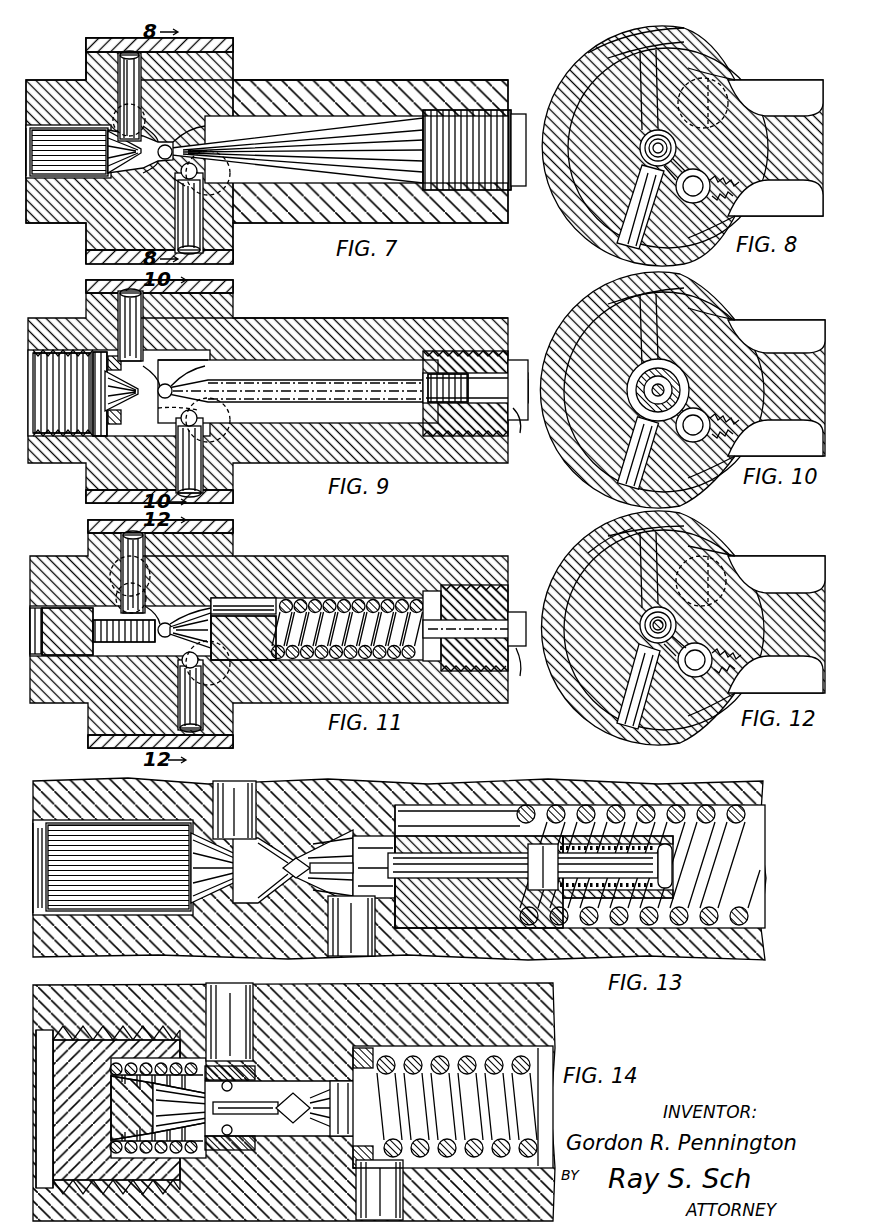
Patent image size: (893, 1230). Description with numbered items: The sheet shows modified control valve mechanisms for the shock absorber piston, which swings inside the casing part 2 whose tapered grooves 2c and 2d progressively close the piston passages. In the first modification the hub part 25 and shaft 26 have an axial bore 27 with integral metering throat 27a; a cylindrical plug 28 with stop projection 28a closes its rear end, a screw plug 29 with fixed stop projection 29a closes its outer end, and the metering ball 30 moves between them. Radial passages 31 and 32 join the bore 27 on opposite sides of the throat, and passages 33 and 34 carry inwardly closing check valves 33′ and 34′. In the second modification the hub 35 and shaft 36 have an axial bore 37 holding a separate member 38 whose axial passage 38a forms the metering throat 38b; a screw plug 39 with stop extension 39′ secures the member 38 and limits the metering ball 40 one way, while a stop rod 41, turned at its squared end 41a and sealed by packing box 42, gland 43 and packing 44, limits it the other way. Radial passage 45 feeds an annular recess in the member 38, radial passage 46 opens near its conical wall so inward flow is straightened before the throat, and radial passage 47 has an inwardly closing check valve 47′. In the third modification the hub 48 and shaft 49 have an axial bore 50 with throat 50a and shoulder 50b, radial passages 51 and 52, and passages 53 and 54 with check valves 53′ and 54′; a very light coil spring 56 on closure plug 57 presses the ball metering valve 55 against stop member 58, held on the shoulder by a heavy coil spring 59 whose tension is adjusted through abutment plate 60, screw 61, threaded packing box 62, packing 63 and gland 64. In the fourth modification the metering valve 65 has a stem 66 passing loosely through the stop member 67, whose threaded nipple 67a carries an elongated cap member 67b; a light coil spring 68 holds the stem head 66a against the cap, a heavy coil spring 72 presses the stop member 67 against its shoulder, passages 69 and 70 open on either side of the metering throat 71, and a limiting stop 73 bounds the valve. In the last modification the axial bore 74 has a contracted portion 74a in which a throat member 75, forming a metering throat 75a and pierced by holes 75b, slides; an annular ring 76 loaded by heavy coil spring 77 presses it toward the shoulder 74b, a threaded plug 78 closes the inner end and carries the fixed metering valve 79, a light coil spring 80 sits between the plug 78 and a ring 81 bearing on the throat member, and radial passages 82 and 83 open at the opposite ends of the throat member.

In FIG. 7, the casing part 2 is at (80, 34).
In FIG. 8, the casing part 2 is at (555, 203).
In FIG. 9, the casing part 2 is at (80, 288).
In FIG. 10, the casing part 2 is at (560, 458).
In FIG. 11, the casing part 2 is at (80, 532).
In FIG. 12, the casing part 2 is at (560, 692).
In FIG. 7, the tapered grooves 2c is at (125, 40).
In FIG. 8, the tapered grooves 2c is at (690, 34).
In FIG. 9, the tapered grooves 2c is at (95, 280).
In FIG. 10, the tapered grooves 2c is at (690, 288).
In FIG. 11, the tapered grooves 2c is at (95, 525).
In FIG. 12, the tapered grooves 2c is at (690, 522).
In FIG. 7, the tapered grooves 2d is at (80, 248).
In FIG. 8, the tapered grooves 2d is at (688, 250).
In FIG. 9, the tapered grooves 2d is at (80, 488).
In FIG. 10, the tapered grooves 2d is at (688, 490).
In FIG. 11, the tapered grooves 2d is at (82, 732).
In FIG. 12, the tapered grooves 2d is at (686, 728).
In FIG. 7, the hub part of the piston 25 is at (213, 62).
In FIG. 8, the hub part of the piston 25 is at (600, 80).
In FIG. 7, the shaft 26 is at (322, 72).
In FIG. 7, the axial bore 27 is at (285, 170).
In FIG. 8, the axial bore 27 is at (628, 146).
In FIG. 7, the metering throat 27a is at (160, 130).
In FIG. 8, the metering throat 27a is at (640, 128).
In FIG. 7, the cylindrical plug 28 is at (50, 170).
In FIG. 7, the stop projection 28a is at (112, 160).
In FIG. 7, the screw plug 29 is at (458, 102).
In FIG. 7, the fixed stop projection 29a is at (268, 128).
In FIG. 8, the fixed stop projection 29a is at (632, 142).
In FIG. 7, the metering ball 30 is at (152, 152).
In FIG. 7, the radially extending passage 31 is at (78, 50).
In FIG. 8, the radially extending passage 31 is at (608, 40).
In FIG. 7, the radial passage 32 is at (200, 230).
In FIG. 8, the radial passage 32 is at (615, 232).
In FIG. 7, the radial passage 33 is at (205, 172).
In FIG. 8, the radial passage 33 is at (700, 165).
In FIG. 7, the inwardly closing check valve 33′ is at (165, 190).
In FIG. 8, the inwardly closing check valve 33′ is at (740, 192).
In FIG. 7, the radial passage 34 is at (110, 124).
In FIG. 8, the radial passage 34 is at (705, 108).
In FIG. 7, the inwardly closing check valve 34′ is at (142, 97).
In FIG. 8, the inwardly closing check valve 34′ is at (745, 88).
In FIG. 9, the hub 35 is at (213, 306).
In FIG. 10, the hub 35 is at (596, 310).
In FIG. 9, the shaft 36 is at (322, 312).
In FIG. 9, the axial bore 37 is at (293, 415).
In FIG. 10, the axial bore 37 is at (625, 396).
In FIG. 9, the separate member 38 is at (158, 362).
In FIG. 10, the separate member 38 is at (625, 370).
In FIG. 9, the axial passage 38a is at (113, 418).
In FIG. 10, the axial passage 38a is at (642, 388).
In FIG. 9, the metering throat 38b is at (182, 356).
In FIG. 9, the screw plug 39 is at (58, 430).
In FIG. 9, the stop extension 39′ is at (92, 430).
In FIG. 9, the metering ball 40 is at (140, 400).
In FIG. 9, the stop rod 41 is at (305, 372).
In FIG. 9, the squared projecting end 41a is at (510, 430).
In FIG. 9, the packing box 42 is at (452, 343).
In FIG. 9, the gland 43 is at (505, 352).
In FIG. 9, the packing 44 is at (450, 428).
In FIG. 9, the radial passage 45 is at (110, 298).
In FIG. 10, the radial passage 45 is at (652, 306).
In FIG. 9, the radial passage 46 is at (200, 466).
In FIG. 10, the radial passage 46 is at (612, 478).
In FIG. 9, the second radial passage 47 is at (195, 404).
In FIG. 10, the second radial passage 47 is at (695, 400).
In FIG. 9, the inwardly closing check valve 47′ is at (205, 424).
In FIG. 10, the inwardly closing check valve 47′ is at (740, 432).
In FIG. 11, the hub 48 is at (213, 546).
In FIG. 12, the hub 48 is at (590, 550).
In FIG. 11, the shaft 49 is at (325, 590).
In FIG. 11, the axial bore 50 is at (262, 595).
In FIG. 12, the axial bore 50 is at (632, 624).
In FIG. 11, the metering throat 50a is at (152, 606).
In FIG. 12, the metering throat 50a is at (640, 612).
In FIG. 11, the shoulder 50b is at (258, 590).
In FIG. 11, the radial passage 51 is at (113, 540).
In FIG. 12, the radial passage 51 is at (640, 560).
In FIG. 11, the radial passage 52 is at (198, 703).
In FIG. 12, the radial passage 52 is at (615, 716).
In FIG. 11, the radially extending passage 53 is at (108, 590).
In FIG. 12, the radially extending passage 53 is at (704, 588).
In FIG. 11, the inwardly closing check valve 53′ is at (102, 566).
In FIG. 12, the inwardly closing check valve 53′ is at (745, 565).
In FIG. 11, the radially extending passage 54 is at (197, 650).
In FIG. 12, the radially extending passage 54 is at (700, 640).
In FIG. 11, the inwardly closing check valve 54′ is at (208, 672).
In FIG. 12, the inwardly closing check valve 54′ is at (740, 670).
In FIG. 11, the ball metering valve 55 is at (156, 630).
In FIG. 11, the very light coil spring 56 is at (128, 634).
In FIG. 11, the closure plug 57 is at (56, 648).
In FIG. 11, the stop member 58 is at (185, 606).
In FIG. 12, the stop member 58 is at (635, 606).
In FIG. 11, the relatively heavy coil spring 59 is at (370, 590).
In FIG. 11, the abutment plate 60 is at (425, 583).
In FIG. 11, the screw 61 is at (506, 604).
In FIG. 11, the threaded packing box 62 is at (462, 580).
In FIG. 11, the packing 63 is at (462, 630).
In FIG. 11, the gland 64 is at (528, 671).
In FIG. 13, the metering valve 65 is at (278, 878).
In FIG. 13, the stem 66 is at (412, 828).
In FIG. 13, the head 66a is at (660, 836).
In FIG. 13, the main member of the yieldable stop 67 is at (445, 845).
In FIG. 13, the threaded nipple 67a is at (538, 836).
In FIG. 13, the elongated cap member 67b is at (605, 836).
In FIG. 13, the light coil spring 68 is at (586, 920).
In FIG. 13, the passage 69 is at (230, 810).
In FIG. 13, the passage 70 is at (340, 930).
In FIG. 13, the metering throat 71 is at (288, 850).
In FIG. 13, the relatively heavy coil spring 72 is at (725, 830).
In FIG. 13, the limiting stop 73 is at (185, 868).
In FIG. 14, the axial bore 74 is at (400, 1038).
In FIG. 14, the cylindrical contracted portion 74a is at (335, 1073).
In FIG. 14, the shoulder 74b is at (350, 1162).
In FIG. 14, the throat member 75 is at (306, 1128).
In FIG. 14, the metering throat 75a is at (283, 1116).
In FIG. 14, the series of holes 75b is at (218, 1128).
In FIG. 14, the annular ring 76 is at (370, 1040).
In FIG. 14, the heavy coil spring 77 is at (484, 1057).
In FIG. 14, the threaded plug 78 is at (108, 1110).
In FIG. 14, the metering valve 79 is at (270, 1094).
In FIG. 14, the light coil spring 80 is at (148, 1072).
In FIG. 14, the ring 81 is at (176, 1052).
In FIG. 14, the radial passage 82 is at (245, 996).
In FIG. 14, the radial passage 83 is at (395, 1184).